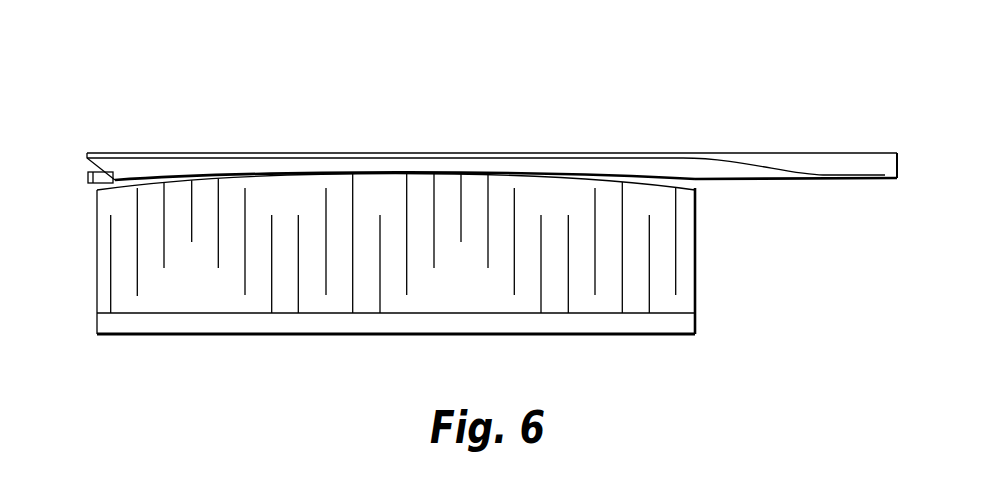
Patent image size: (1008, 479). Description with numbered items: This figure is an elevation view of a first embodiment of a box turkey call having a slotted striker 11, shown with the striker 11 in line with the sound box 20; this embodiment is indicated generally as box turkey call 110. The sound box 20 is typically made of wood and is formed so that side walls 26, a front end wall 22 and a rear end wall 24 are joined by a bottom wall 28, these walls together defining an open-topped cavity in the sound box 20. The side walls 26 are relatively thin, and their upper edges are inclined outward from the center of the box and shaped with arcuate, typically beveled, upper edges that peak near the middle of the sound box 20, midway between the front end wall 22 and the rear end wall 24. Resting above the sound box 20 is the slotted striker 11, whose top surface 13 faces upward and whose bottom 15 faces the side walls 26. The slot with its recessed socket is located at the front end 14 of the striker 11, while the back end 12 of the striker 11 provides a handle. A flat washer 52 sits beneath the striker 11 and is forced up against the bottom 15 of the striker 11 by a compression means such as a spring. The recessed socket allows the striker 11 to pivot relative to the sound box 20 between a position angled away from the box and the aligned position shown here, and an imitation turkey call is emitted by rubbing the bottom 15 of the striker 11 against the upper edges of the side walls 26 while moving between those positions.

The cooling assembly 110 is at (232, 100).
The slotted striker 11 is at (570, 108).
The back end of the striker 12 is at (843, 153).
The top surface of the striker 13 is at (477, 153).
The front end of the striker 14 is at (113, 153).
The bottom of the striker 15 is at (657, 186).
The sound box 20 is at (732, 313).
The front end wall 22 is at (97, 228).
The rear end wall 24 is at (697, 248).
The side walls 26 is at (287, 282).
The bottom wall 28 is at (157, 323).
The flat washer 52 is at (87, 178).